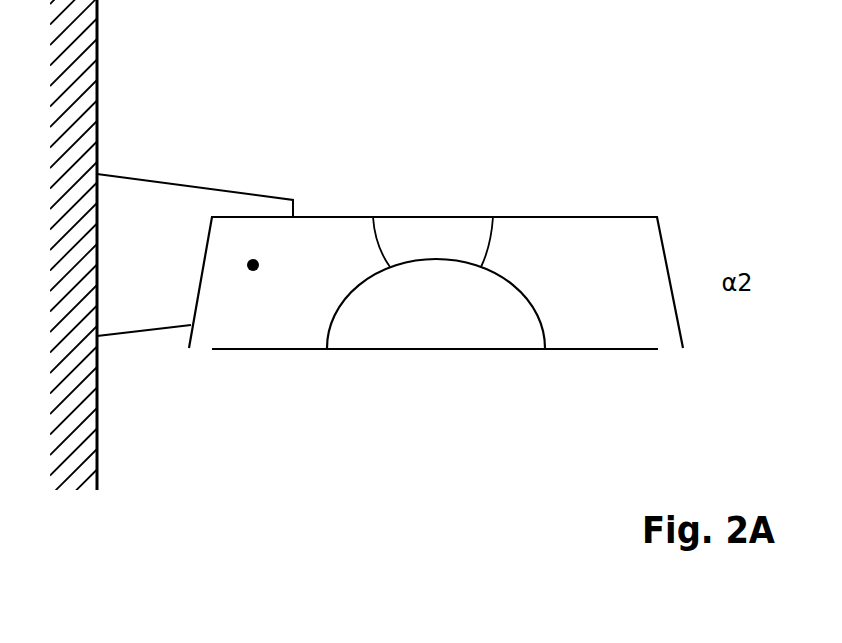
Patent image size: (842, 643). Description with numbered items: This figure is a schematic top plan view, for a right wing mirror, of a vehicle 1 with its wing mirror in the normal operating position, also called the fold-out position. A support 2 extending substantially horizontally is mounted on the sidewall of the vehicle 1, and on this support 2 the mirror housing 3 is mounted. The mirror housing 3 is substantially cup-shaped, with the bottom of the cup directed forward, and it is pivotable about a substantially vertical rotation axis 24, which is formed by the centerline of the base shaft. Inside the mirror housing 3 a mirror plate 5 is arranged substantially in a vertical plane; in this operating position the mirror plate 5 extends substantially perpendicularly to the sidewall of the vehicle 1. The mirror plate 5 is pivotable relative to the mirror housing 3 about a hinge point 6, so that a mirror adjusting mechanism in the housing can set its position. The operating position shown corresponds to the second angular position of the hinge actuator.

The vehicle 1 is at (98, 25).
The support 2 is at (155, 182).
The mirror housing 3 is at (576, 216).
The mirror plate 5 is at (578, 350).
The hinge point 6 is at (436, 276).
The rotation axis 24 is at (253, 265).